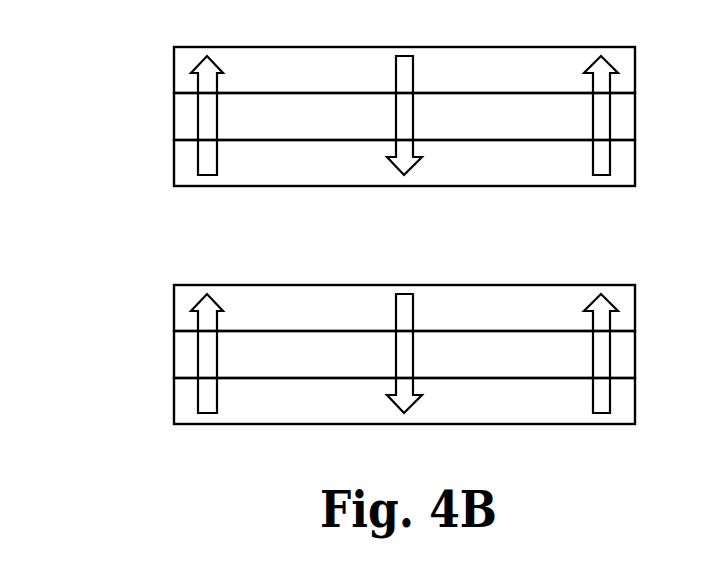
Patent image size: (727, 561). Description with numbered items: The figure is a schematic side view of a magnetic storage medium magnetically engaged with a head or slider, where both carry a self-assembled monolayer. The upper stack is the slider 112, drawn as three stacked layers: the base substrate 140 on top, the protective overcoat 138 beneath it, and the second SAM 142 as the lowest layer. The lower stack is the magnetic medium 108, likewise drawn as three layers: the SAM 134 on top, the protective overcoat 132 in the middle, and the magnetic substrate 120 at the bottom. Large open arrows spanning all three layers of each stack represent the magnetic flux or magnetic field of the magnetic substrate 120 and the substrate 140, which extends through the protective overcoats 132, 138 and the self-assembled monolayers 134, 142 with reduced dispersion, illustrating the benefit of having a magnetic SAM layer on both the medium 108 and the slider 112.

The slider 112 is at (376, 116).
The base substrate 140 is at (625, 70).
The protective overcoat 138 is at (625, 120).
The second SAM 142 is at (625, 166).
The magnetic medium 108 is at (376, 354).
The SAM 134 is at (625, 308).
The protective overcoat 132 is at (625, 356).
The magnetic substrate 120 is at (625, 404).